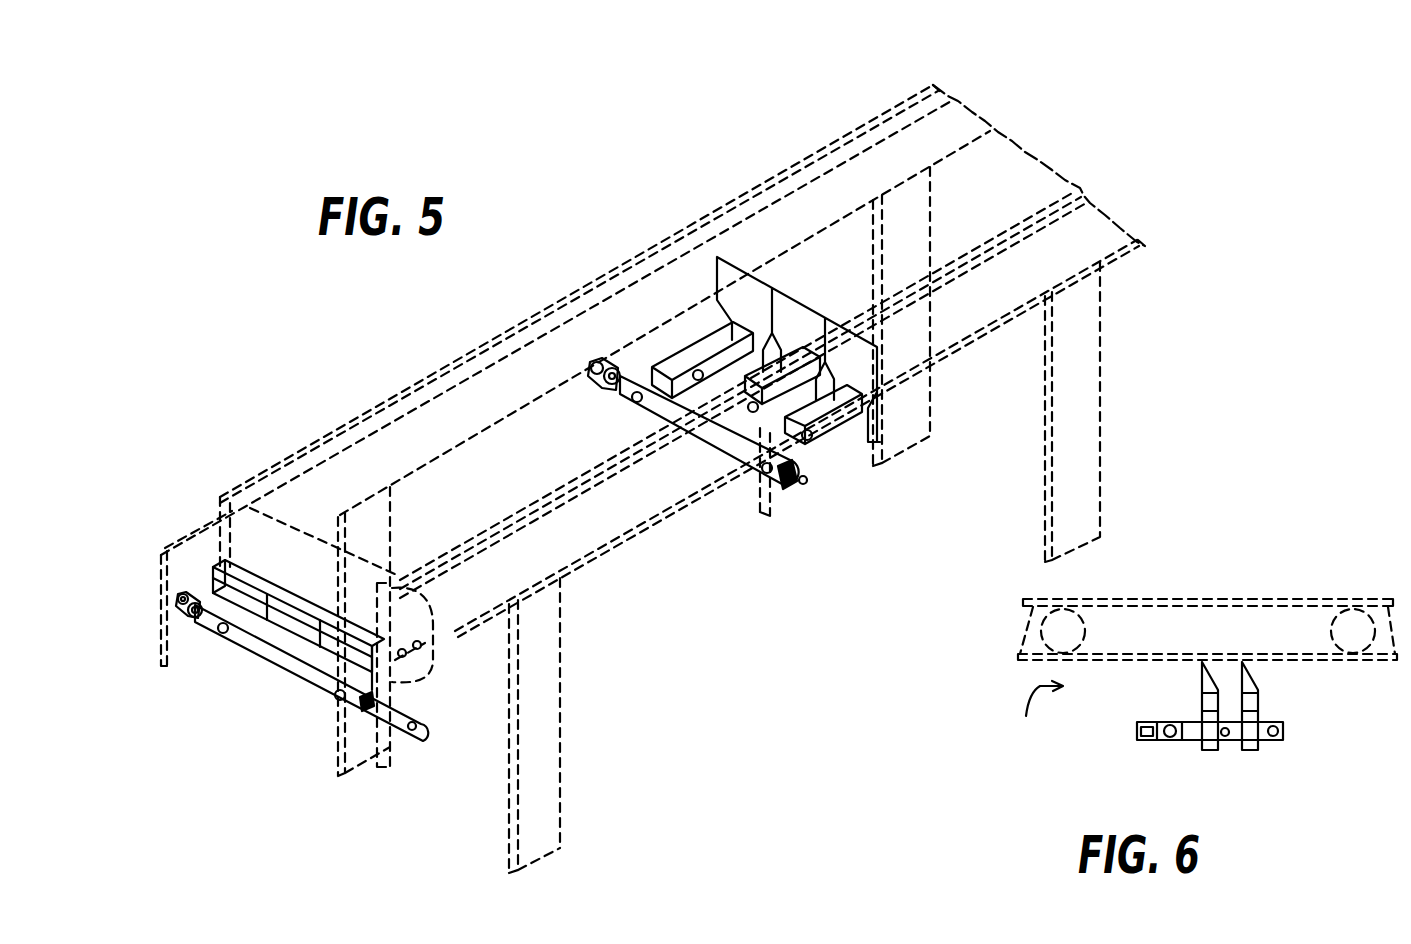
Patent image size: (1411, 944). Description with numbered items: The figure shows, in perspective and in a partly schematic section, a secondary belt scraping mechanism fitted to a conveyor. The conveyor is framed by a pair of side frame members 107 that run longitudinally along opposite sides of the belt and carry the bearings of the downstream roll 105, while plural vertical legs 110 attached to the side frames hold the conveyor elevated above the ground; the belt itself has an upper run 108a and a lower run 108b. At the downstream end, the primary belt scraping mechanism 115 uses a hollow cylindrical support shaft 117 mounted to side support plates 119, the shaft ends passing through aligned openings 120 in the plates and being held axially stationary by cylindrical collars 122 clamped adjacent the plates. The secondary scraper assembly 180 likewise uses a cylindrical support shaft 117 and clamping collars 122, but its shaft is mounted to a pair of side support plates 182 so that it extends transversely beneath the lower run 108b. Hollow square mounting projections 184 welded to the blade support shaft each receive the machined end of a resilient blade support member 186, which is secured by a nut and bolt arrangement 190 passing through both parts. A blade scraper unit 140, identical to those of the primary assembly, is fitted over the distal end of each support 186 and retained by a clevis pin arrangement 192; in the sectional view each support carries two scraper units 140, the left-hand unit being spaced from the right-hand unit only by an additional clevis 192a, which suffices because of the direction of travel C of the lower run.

In FIG. 5, the downstream roll 105 is at (397, 523).
In FIG. 5, the side frame members 107 is at (588, 546).
In FIG. 6, the upper run 108a is at (1213, 600).
In FIG. 6, the lower run 108b is at (1097, 656).
In FIG. 5, the vertical legs 110 is at (548, 790).
In FIG. 5, the primary belt scraping mechanism 115 is at (237, 662).
In FIG. 5, the cylindrical support shaft 117 is at (420, 730).
In FIG. 5, the side support plates 119 is at (163, 630).
In FIG. 5, the aligned openings 120 is at (180, 594).
In FIG. 5, the cylindrical collars 122 is at (190, 620).
In FIG. 5, the blade scraper units 140 is at (256, 672).
In FIG. 6, the blade scraper units 140 is at (1230, 676).
In FIG. 5, the secondary scraper assembly 180 is at (739, 463).
In FIG. 6, the secondary scraper assembly 180 is at (1214, 714).
In FIG. 5, the side support plates 182 is at (762, 505).
In FIG. 5, the mounting projections 184 is at (668, 366).
In FIG. 5, the blade support member 186 is at (838, 420).
In FIG. 6, the blade support member 186 is at (1283, 738).
In FIG. 5, the nut and bolt arrangement 190 is at (698, 368).
In FIG. 6, the nut and bolt arrangement 190 is at (1170, 724).
In FIG. 6, the clevis pin arrangement 192 is at (1269, 681).
In FIG. 6, the additional clevis/cotter pin arrangement 192a is at (1252, 762).
In FIG. 6, the direction of travel C is at (1036, 705).